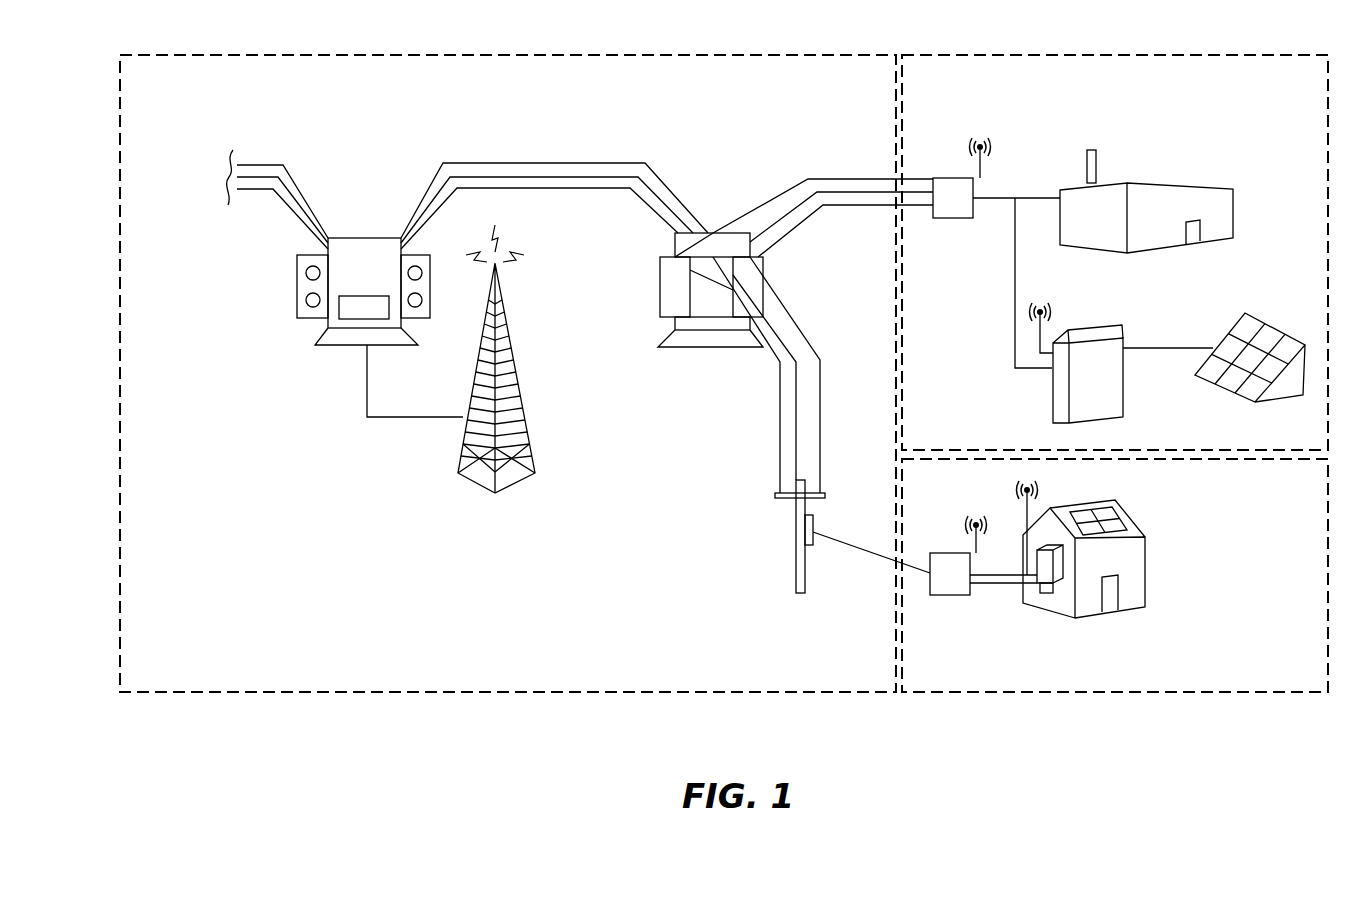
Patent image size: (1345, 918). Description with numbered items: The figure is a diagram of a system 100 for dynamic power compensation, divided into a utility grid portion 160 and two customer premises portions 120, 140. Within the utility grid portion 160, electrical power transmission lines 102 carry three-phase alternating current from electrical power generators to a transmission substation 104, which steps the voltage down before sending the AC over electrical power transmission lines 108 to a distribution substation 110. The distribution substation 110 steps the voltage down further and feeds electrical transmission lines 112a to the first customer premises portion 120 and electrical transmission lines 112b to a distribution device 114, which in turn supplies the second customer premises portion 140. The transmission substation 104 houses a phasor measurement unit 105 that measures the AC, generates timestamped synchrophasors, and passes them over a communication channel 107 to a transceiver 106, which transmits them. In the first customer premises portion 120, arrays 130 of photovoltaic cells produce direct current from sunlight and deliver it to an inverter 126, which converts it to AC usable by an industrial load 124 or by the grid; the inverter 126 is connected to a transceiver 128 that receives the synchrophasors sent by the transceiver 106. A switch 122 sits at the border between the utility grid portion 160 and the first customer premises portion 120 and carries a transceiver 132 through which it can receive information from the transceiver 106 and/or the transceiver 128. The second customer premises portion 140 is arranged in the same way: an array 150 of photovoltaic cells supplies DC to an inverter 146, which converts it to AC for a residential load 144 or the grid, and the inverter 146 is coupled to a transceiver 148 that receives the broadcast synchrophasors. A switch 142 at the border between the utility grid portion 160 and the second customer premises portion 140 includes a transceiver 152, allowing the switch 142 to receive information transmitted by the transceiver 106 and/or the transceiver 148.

The system for dynamic power compensation 100 is at (488, 722).
The electrical power transmission lines 102 is at (265, 138).
The transmission substation 104 is at (316, 345).
The phasor measurement unit (PMU) 105 is at (365, 296).
The transceiver 106 is at (458, 473).
The communication channel 107 is at (367, 396).
The electrical power transmission lines 108 is at (574, 150).
The distribution substation 110 is at (660, 347).
The electrical transmission lines 112a is at (854, 165).
The electrical transmission lines 112b is at (774, 437).
The distribution device 114 is at (796, 545).
The first customer premises portion 120 is at (1212, 55).
The switch 122 is at (962, 178).
The industrial load 124 is at (1200, 188).
The inverter 126 is at (1106, 330).
The transceiver 128 is at (1040, 327).
The arrays of photovoltaic cells 130 is at (1255, 316).
The transceiver 132 is at (983, 165).
The second customer premises portion 140 is at (1230, 693).
The switch 142 is at (962, 595).
The residential load 144 is at (1148, 568).
The inverter 146 is at (1046, 593).
The transceiver 148 is at (1027, 496).
The array of photovoltaic cells 150 is at (1128, 516).
The transceiver 152 is at (976, 540).
The utility grid portion 160 is at (803, 693).